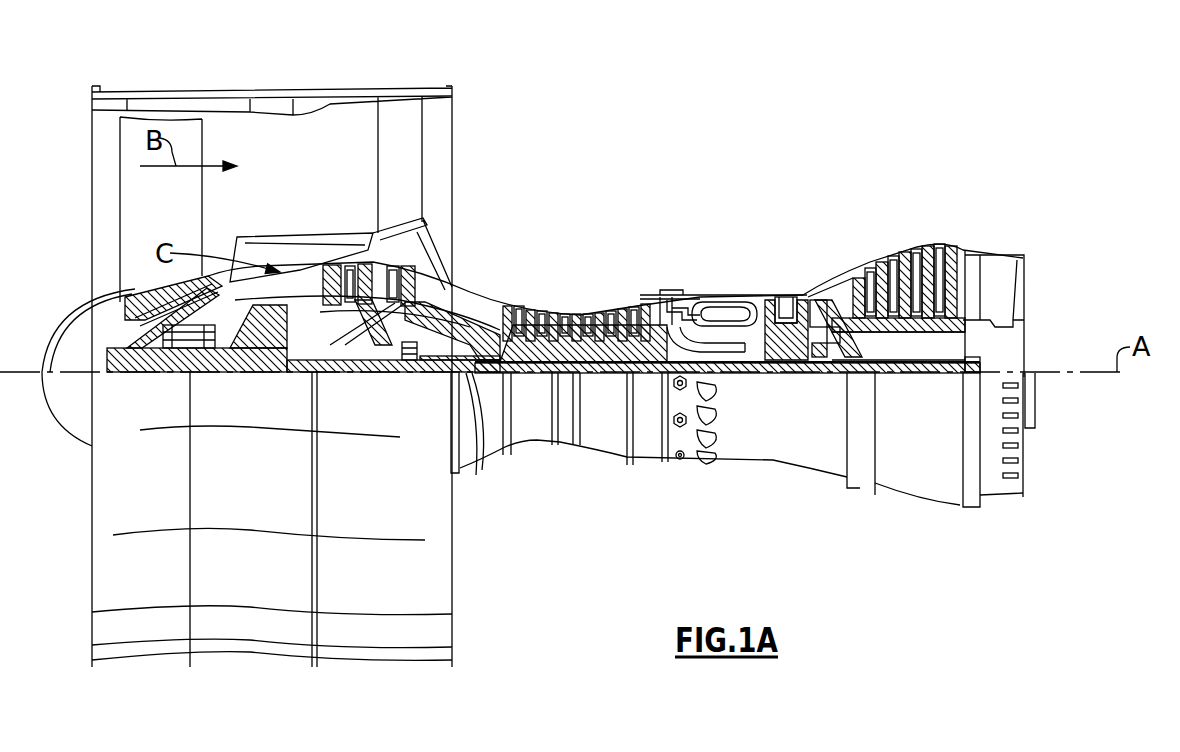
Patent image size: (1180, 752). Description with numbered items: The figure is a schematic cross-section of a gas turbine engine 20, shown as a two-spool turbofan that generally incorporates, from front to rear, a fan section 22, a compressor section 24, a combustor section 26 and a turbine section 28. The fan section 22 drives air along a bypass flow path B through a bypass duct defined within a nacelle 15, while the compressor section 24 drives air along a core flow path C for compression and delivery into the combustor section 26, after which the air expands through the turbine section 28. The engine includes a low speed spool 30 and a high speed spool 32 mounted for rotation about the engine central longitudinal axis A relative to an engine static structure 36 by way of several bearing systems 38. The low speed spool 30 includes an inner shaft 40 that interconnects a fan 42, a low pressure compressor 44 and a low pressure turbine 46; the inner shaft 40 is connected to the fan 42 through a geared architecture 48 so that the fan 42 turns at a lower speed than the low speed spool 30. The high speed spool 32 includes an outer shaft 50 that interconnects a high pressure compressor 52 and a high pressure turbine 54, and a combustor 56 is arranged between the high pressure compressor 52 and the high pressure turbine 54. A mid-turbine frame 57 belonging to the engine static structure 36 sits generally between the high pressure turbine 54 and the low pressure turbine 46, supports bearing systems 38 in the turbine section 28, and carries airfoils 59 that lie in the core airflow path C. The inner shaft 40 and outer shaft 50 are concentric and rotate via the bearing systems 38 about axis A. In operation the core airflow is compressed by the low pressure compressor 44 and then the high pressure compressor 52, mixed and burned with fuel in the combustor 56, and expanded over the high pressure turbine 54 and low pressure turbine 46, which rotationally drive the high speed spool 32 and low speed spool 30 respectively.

The nacelle 15 is at (272, 97).
The gas turbine engine 20 is at (735, 132).
The fan section 22 is at (197, 74).
The compressor section 24 is at (504, 272).
The combustor section 26 is at (772, 283).
The turbine section 28 is at (917, 275).
The low speed spool 30 is at (605, 392).
The high speed spool 32 is at (652, 316).
The engine static structure 36 is at (647, 474).
The bearing systems 38 is at (408, 352).
The inner shaft 40 is at (468, 378).
The fan 42 is at (176, 220).
The low pressure compressor 44 is at (365, 285).
The low pressure turbine 46 is at (917, 257).
The geared architecture 48 is at (280, 352).
The outer shaft 50 is at (725, 352).
The high pressure compressor 52 is at (580, 335).
The high pressure turbine 54 is at (787, 297).
The combustor 56 is at (720, 318).
The mid-turbine frame 57 is at (835, 270).
The airfoils 59 is at (833, 322).